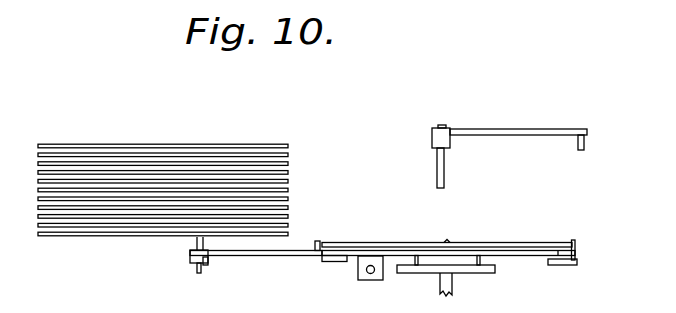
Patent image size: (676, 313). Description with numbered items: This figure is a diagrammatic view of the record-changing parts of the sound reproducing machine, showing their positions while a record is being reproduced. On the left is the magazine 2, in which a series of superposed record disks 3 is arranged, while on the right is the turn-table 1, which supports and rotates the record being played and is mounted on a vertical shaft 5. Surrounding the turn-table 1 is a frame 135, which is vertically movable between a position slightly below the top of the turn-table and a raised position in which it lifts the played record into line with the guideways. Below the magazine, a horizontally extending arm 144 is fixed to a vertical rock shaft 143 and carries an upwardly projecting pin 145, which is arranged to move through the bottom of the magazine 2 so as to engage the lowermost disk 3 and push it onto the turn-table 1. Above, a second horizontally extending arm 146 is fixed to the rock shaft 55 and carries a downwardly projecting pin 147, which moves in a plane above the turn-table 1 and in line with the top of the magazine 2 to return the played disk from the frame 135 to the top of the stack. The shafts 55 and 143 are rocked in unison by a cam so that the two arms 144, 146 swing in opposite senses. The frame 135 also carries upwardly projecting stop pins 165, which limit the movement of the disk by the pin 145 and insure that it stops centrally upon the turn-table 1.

The turn-table 1 is at (526, 252).
The magazine 2 is at (291, 181).
The record disks 3 is at (173, 145).
The vertical shaft 5 is at (454, 285).
The rock shaft 55 is at (442, 126).
The frame 135 is at (527, 257).
The vertical rock shaft 143 is at (201, 271).
The horizontally extending arm 144 is at (256, 277).
The upwardly projecting pin 145 is at (317, 240).
The horizontally extending arm 146 is at (513, 129).
The downwardly projecting pin 147 is at (584, 144).
The stop pins 165 is at (577, 250).